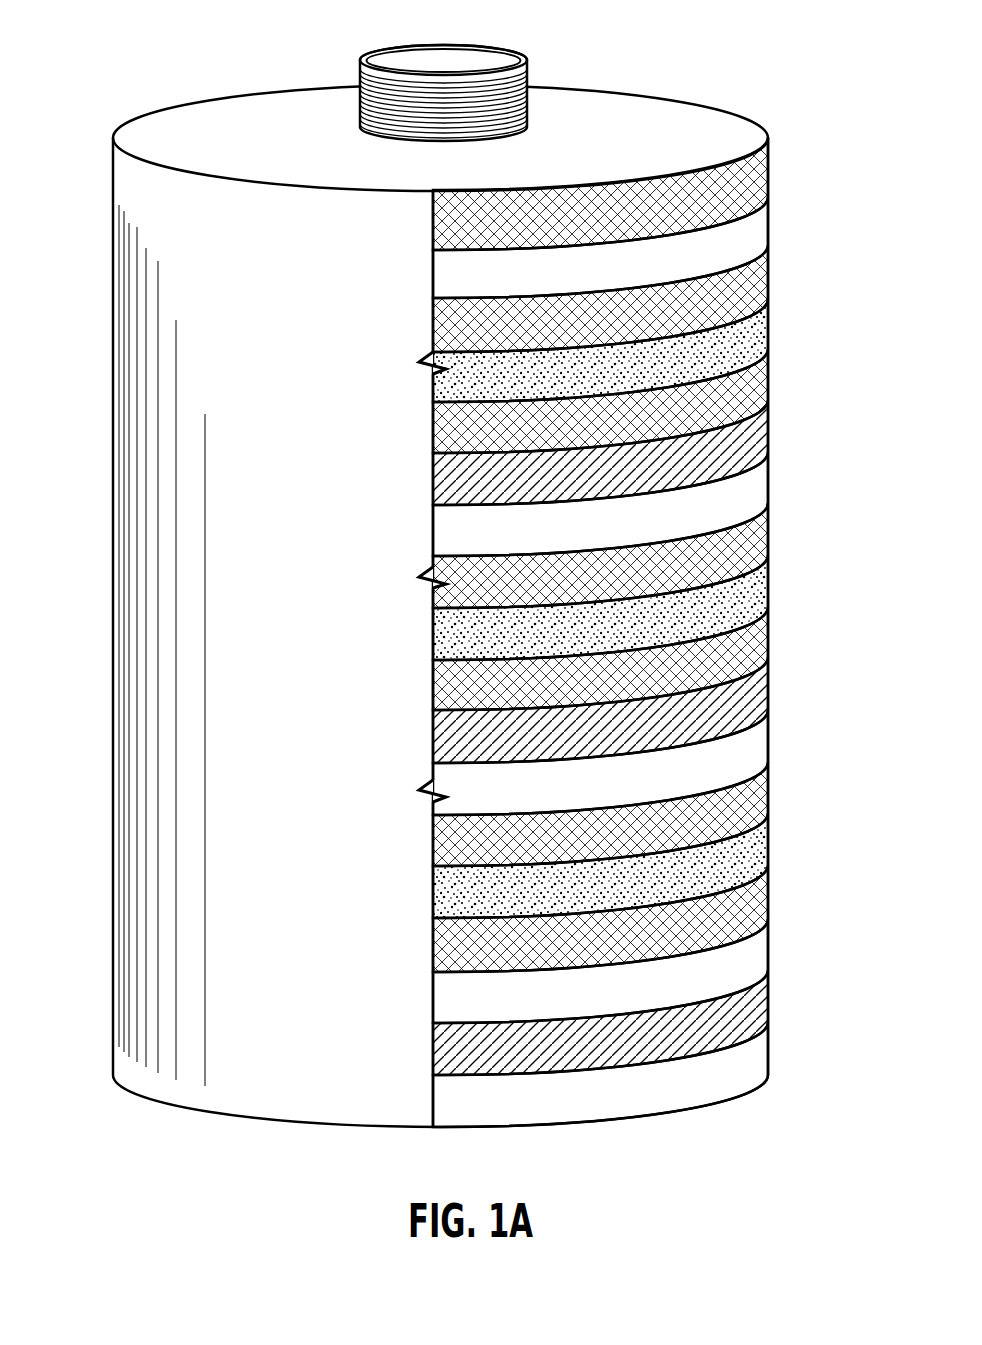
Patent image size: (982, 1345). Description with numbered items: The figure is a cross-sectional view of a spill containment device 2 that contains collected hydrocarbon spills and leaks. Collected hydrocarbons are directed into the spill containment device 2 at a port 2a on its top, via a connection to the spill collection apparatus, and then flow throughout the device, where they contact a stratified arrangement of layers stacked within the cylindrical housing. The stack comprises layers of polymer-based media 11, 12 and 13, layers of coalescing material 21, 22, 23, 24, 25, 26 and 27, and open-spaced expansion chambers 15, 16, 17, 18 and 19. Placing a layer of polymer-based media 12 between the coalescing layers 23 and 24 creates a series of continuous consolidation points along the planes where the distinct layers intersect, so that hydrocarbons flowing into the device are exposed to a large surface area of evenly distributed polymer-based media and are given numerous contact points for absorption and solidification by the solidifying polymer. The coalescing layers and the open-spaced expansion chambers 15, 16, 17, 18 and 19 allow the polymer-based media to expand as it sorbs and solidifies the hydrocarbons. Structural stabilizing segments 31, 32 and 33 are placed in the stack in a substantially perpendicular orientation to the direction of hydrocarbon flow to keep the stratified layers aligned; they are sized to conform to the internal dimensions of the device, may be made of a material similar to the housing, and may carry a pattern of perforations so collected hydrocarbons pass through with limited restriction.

The spill containment device 2 is at (338, 643).
The port 2a is at (358, 59).
The coalescing material 27 is at (761, 167).
The coalescing material 26 is at (761, 275).
The coalescing material 25 is at (761, 375).
The coalescing layer 24 is at (761, 531).
The coalescing layer 23 is at (761, 635).
The coalescing material 22 is at (761, 792).
The coalescing material 21 is at (761, 894).
The open-spaced expansion chamber 19 is at (761, 217).
The open-spaced expansion chamber 18 is at (761, 478).
The open-spaced expansion chamber 17 is at (761, 737).
The open-spaced expansion chamber 16 is at (761, 944).
The open-spaced expansion chamber 15 is at (761, 1047).
The polymer-based media 13 is at (761, 326).
The polymer-based media 12 is at (761, 584).
The polymer-based media 11 is at (761, 841).
The structural stabilizing segment 33 is at (761, 427).
The structural stabilizing segment 32 is at (761, 685).
The structural stabilizing segment 31 is at (761, 996).